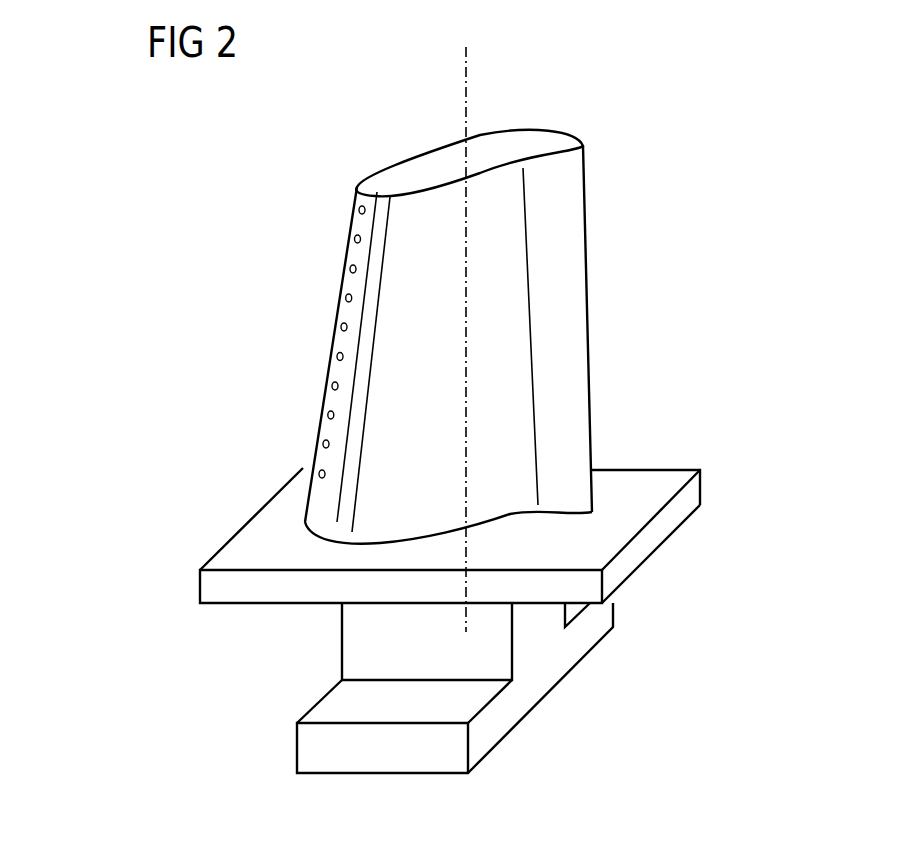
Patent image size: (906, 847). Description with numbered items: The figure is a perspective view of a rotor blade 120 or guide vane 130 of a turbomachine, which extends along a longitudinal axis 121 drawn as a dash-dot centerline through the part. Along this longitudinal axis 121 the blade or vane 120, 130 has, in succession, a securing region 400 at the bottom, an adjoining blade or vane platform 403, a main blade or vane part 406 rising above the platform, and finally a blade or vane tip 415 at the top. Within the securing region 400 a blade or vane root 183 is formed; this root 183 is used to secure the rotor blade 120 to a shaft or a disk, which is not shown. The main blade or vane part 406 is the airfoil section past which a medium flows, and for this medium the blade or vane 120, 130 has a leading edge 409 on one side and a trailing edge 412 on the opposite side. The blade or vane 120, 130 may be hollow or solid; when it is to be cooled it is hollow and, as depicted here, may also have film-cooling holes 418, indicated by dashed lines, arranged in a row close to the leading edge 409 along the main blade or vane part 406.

The rotor blade 120 is at (388, 300).
The guide vane 130 is at (388, 300).
The longitudinal axis 121 is at (466, 83).
The blade or vane root 183 is at (332, 707).
The securing region 400 is at (446, 688).
The blade or vane platform 403 is at (670, 512).
The main blade or vane part 406 is at (322, 508).
The leading edge 409 is at (334, 268).
The trailing edge 412 is at (600, 297).
The blade or vane tip 415 is at (378, 187).
The film-cooling holes 418 is at (359, 211).